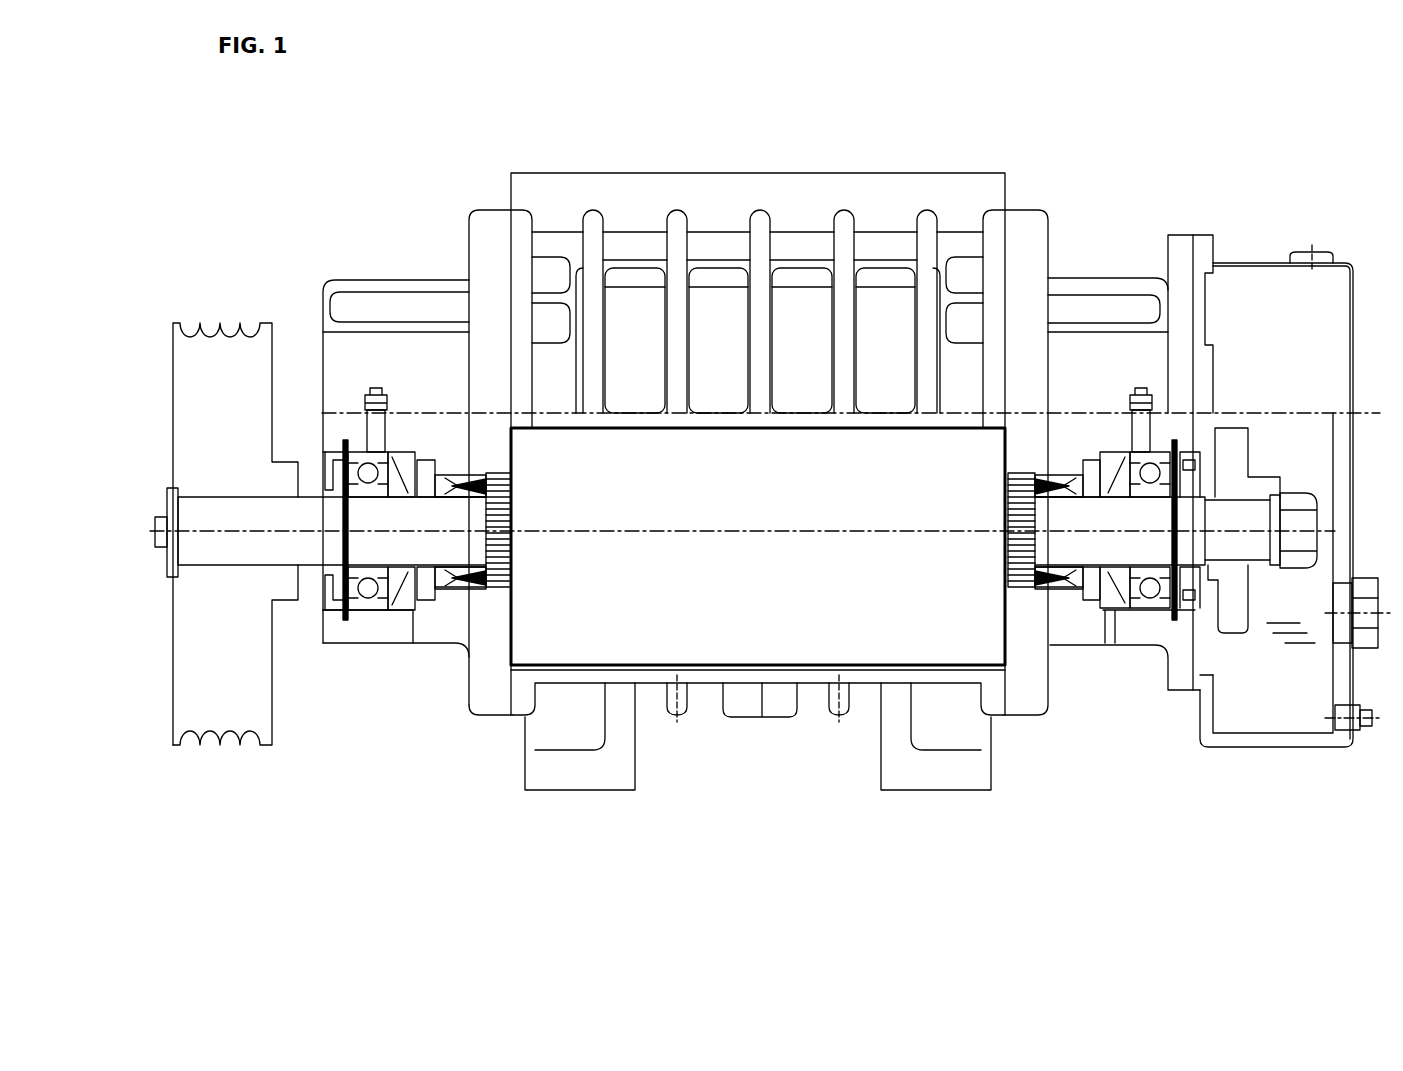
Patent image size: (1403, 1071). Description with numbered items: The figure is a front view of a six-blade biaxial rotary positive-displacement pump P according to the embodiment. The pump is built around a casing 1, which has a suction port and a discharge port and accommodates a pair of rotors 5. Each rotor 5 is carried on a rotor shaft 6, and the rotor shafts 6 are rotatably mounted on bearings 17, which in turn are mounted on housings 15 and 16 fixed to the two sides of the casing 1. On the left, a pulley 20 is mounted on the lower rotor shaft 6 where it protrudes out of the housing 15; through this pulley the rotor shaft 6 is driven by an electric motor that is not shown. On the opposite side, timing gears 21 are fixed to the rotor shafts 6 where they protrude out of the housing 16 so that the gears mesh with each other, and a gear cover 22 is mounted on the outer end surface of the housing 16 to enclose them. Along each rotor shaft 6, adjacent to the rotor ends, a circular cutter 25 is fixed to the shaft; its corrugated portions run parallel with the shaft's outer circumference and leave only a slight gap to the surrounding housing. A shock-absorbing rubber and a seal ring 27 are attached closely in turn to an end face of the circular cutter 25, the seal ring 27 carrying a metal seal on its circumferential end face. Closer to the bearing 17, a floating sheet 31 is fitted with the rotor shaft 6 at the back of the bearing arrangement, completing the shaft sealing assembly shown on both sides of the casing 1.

The six-blade biaxial rotary positive-displacement pump P is at (632, 157).
The casing 1 is at (735, 235).
The rotor 5 is at (698, 657).
The rotor shaft 6 is at (355, 520).
The housing 15 is at (480, 210).
The housing 16 is at (1040, 210).
The bearing 17 is at (330, 448).
The pulley 20 is at (212, 343).
The timing gear 21 is at (1237, 633).
The gear cover 22 is at (1250, 262).
The circular cutter 25 is at (500, 587).
The seal ring 27 is at (475, 587).
The floating sheet 31 is at (448, 587).